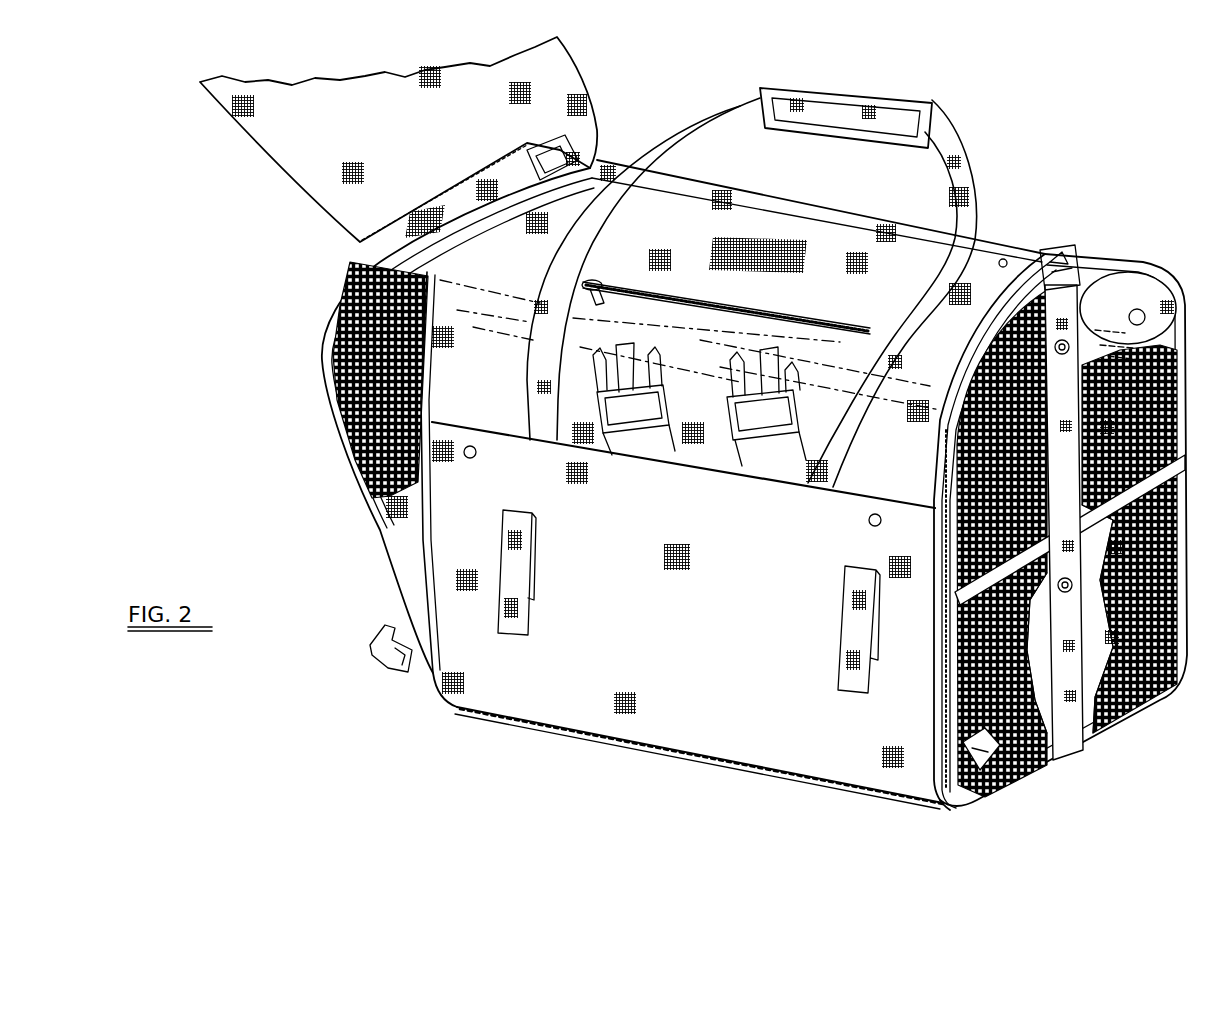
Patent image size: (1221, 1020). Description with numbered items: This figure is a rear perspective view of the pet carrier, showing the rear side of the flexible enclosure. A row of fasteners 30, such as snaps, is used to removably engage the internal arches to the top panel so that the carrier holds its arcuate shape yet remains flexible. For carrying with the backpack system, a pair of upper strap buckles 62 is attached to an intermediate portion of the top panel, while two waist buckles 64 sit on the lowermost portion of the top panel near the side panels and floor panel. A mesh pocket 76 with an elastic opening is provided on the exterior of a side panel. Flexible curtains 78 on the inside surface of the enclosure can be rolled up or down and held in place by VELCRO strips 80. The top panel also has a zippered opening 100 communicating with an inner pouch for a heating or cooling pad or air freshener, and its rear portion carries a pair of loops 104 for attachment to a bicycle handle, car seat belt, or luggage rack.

The fasteners 30 is at (593, 157).
The upper strap buckles 62 is at (762, 467).
The waist buckles 64 is at (380, 653).
The mesh pocket 76 is at (1050, 632).
The flexible curtains 78 is at (557, 78).
The VELCRO strips 80 is at (425, 218).
The zippered opening 100 is at (660, 290).
The loops 104 is at (503, 515).